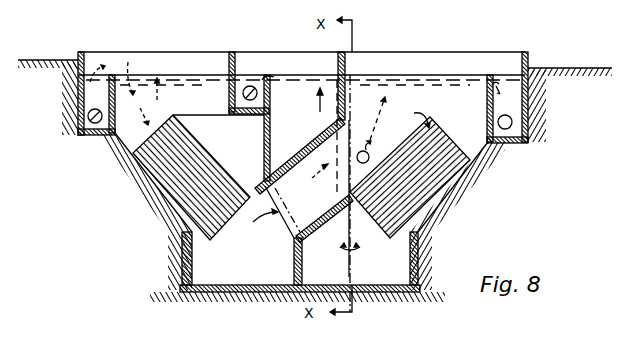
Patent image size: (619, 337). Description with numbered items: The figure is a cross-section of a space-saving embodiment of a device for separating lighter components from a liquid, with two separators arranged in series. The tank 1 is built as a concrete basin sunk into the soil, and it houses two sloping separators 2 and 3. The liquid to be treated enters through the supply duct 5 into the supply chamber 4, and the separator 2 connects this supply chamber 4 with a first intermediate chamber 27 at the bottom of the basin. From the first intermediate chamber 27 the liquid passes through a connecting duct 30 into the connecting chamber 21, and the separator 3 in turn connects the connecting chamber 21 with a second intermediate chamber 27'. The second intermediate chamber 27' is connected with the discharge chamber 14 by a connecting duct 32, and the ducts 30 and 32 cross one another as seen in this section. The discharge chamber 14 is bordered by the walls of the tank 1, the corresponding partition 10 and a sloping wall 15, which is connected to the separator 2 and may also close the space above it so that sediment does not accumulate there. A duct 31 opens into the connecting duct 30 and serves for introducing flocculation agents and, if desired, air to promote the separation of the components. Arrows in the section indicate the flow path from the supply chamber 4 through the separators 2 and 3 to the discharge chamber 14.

The tank 1 is at (170, 264).
The separator 2 is at (146, 190).
The separator 3 is at (450, 200).
The supply chamber 4 is at (196, 108).
The supply duct 5 is at (74, 128).
The partition 10 is at (233, 54).
The discharge chamber 14 is at (294, 73).
The sloping wall 15 is at (216, 117).
The connecting chamber 21 is at (419, 111).
The first intermediate chamber 27 is at (242, 258).
The second intermediate chamber 27' is at (379, 258).
The connecting duct 30 is at (305, 193).
The duct 31 is at (377, 130).
The connecting duct 32 is at (312, 145).